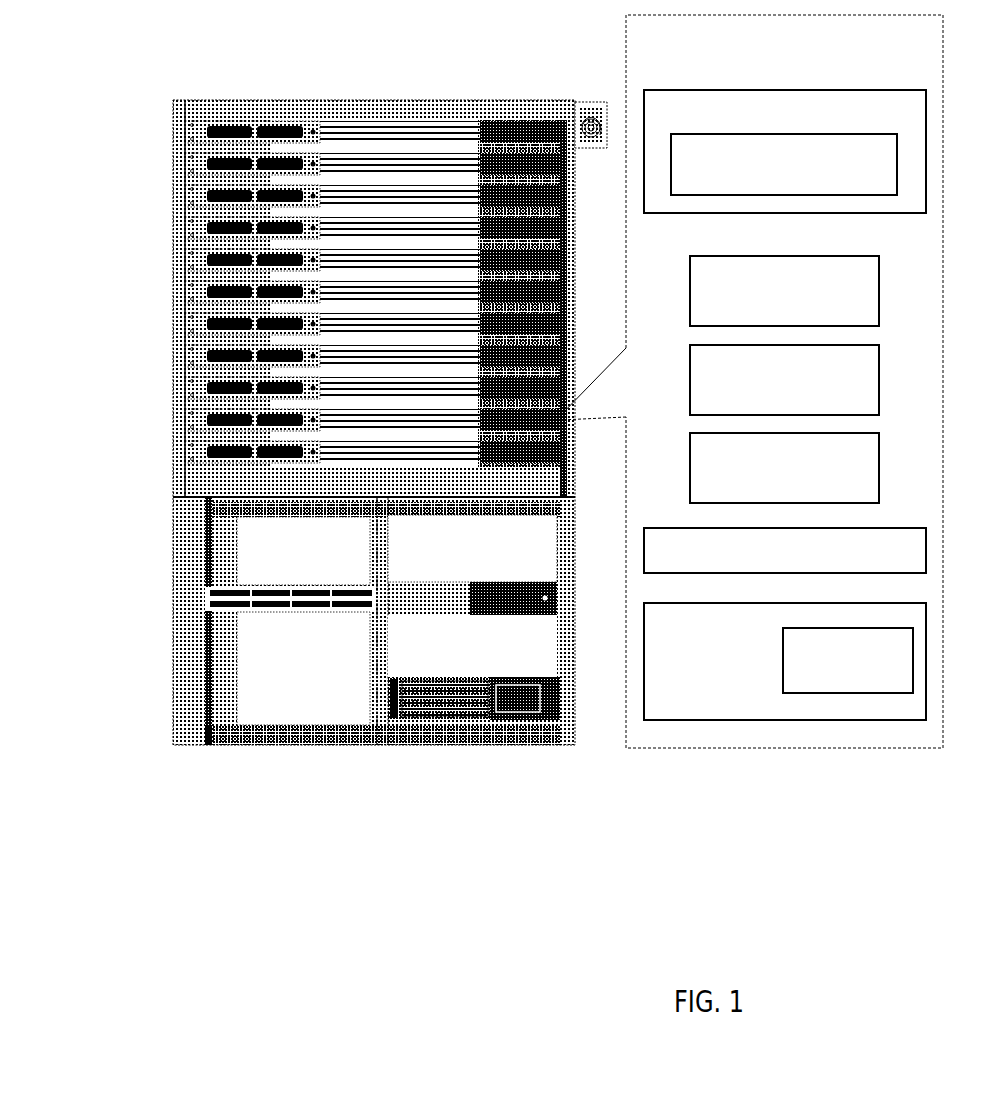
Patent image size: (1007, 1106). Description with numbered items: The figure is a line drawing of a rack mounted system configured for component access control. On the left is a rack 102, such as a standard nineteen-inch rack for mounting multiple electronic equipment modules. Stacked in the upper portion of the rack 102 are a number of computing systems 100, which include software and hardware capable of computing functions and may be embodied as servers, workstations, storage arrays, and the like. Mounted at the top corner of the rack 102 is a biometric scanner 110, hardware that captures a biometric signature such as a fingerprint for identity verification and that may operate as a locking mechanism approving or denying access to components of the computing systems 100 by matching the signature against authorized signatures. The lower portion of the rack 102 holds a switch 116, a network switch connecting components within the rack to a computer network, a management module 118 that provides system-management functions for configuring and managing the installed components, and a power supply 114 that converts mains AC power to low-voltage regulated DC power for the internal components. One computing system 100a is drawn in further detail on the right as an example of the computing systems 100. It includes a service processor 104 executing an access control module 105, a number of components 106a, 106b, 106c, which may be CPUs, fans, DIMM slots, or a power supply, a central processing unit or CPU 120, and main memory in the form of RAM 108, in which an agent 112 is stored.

The computing systems 100 is at (153, 467).
The computing system 100a is at (784, 381).
The rack 102 is at (319, 376).
The service processor 104 is at (785, 151).
The access control module 105 is at (784, 164).
The component 106a is at (784, 291).
The component 106b is at (784, 380).
The component 106c is at (784, 468).
The RAM 108 is at (785, 661).
The biometric scanner 110 is at (592, 98).
The agent 112 is at (848, 660).
The power supply 114 is at (474, 667).
The switch 116 is at (290, 621).
The management module 118 is at (472, 565).
The CPU 120 is at (785, 550).